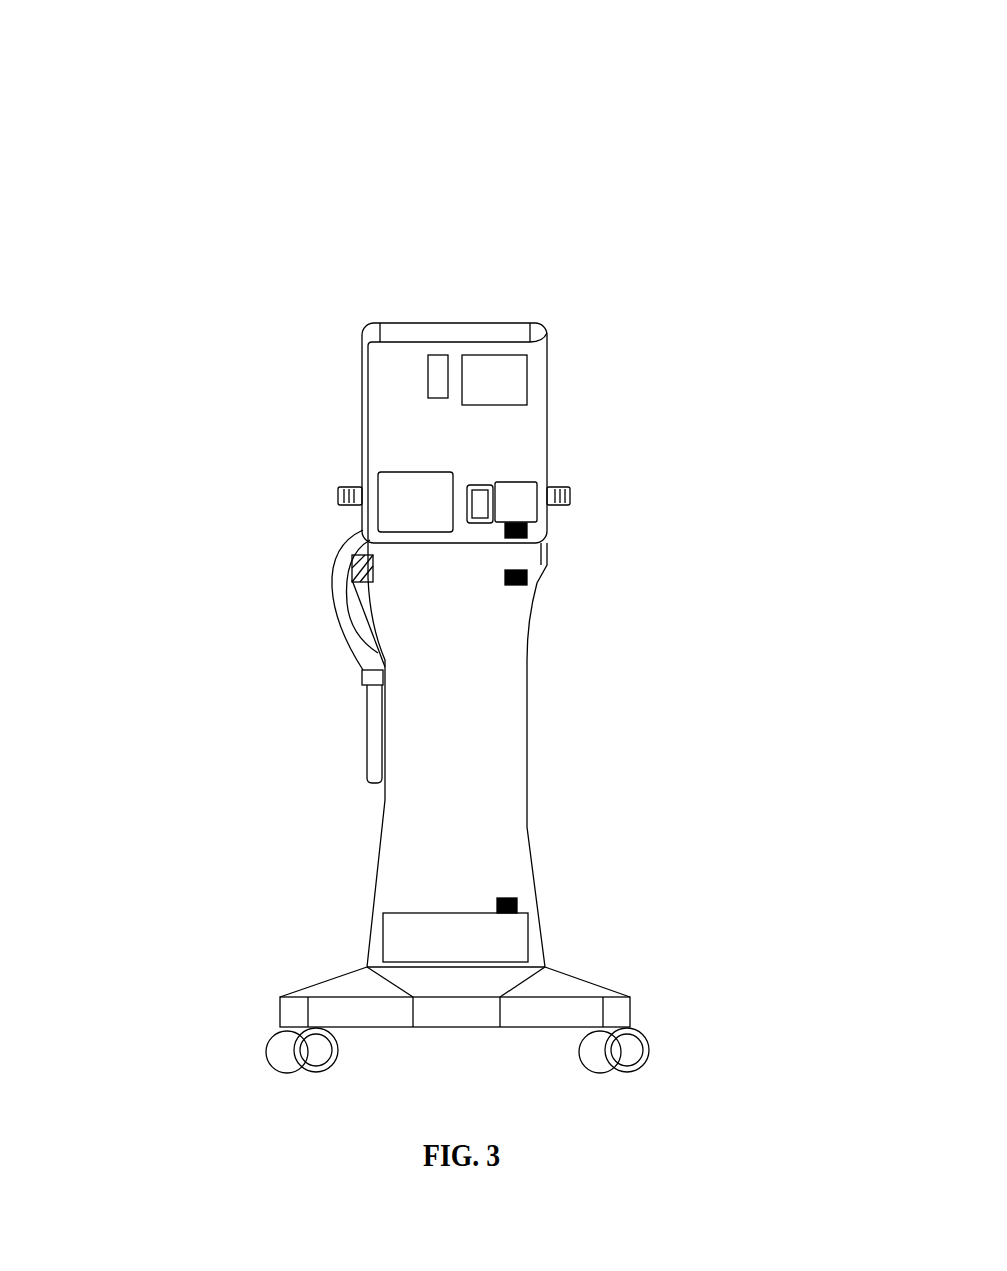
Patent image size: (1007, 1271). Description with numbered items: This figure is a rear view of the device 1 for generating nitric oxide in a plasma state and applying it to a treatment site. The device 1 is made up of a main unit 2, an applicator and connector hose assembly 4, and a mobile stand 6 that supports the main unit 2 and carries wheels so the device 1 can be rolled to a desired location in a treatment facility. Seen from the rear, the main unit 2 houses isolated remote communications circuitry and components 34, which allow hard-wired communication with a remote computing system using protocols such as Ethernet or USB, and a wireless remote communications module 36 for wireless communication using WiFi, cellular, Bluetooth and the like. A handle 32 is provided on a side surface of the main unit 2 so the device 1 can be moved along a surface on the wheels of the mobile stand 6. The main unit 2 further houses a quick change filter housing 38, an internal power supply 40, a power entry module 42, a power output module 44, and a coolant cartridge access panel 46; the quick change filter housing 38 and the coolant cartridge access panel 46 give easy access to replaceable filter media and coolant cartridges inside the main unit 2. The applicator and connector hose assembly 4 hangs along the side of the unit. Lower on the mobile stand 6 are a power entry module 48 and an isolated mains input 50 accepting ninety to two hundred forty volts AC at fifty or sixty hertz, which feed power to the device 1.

The device 1 is at (416, 174).
The main unit 2 is at (502, 314).
The applicator and connector hose assembly 4 is at (332, 533).
The mobile stand 6 is at (558, 724).
The handle 32 is at (573, 493).
The isolated remote communications circuitry and components 34 is at (417, 314).
The wireless remote communications module 36 is at (548, 322).
The quick change filter housing 38 is at (480, 483).
The internal power supply 40 is at (532, 484).
The power entry module 42 is at (550, 525).
The power output module 44 is at (540, 576).
The coolant cartridge access panel 46 is at (358, 487).
The power entry module 48 is at (520, 896).
The isolated 90-240 VAC 50/60 Hz input 50 is at (531, 910).